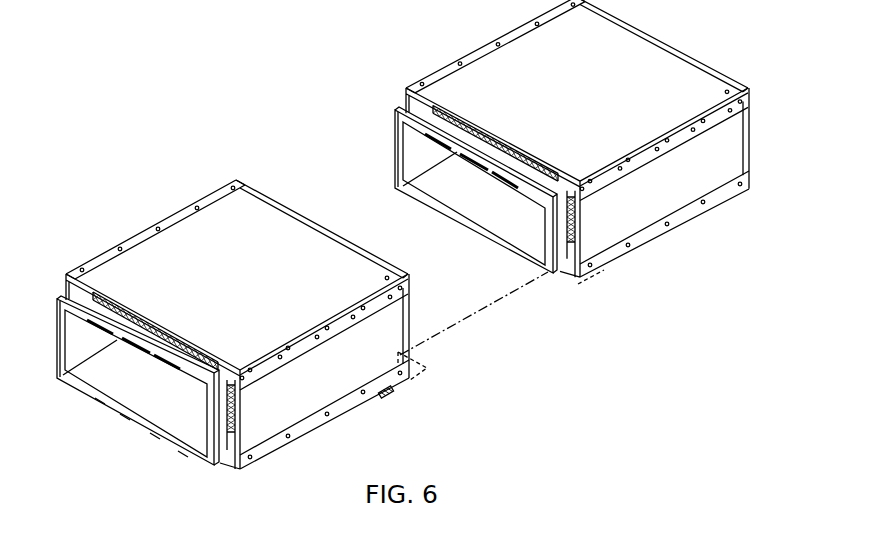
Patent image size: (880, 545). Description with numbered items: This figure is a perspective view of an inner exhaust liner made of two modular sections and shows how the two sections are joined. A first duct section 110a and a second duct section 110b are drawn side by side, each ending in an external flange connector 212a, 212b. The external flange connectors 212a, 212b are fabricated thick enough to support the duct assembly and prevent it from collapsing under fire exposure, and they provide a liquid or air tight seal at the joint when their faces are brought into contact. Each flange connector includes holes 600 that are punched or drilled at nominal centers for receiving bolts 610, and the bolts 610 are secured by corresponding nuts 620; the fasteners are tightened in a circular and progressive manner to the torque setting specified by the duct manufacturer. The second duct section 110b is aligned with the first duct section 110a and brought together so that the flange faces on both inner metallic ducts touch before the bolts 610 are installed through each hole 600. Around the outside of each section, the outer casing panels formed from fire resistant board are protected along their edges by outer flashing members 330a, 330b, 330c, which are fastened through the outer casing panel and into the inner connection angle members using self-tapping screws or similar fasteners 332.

The first duct section 110a is at (108, 195).
The second duct section 110b is at (450, 26).
The external flange connector 212a is at (128, 424).
The external flange connector 212b is at (478, 244).
The outer flashing member 330a is at (211, 199).
The outer flashing member 330b is at (378, 284).
The outer flashing member 330c is at (337, 407).
The self-tapping screws 332 is at (247, 185).
The holes 600 is at (547, 278).
The bolts 610 is at (388, 395).
The nuts 620 is at (625, 262).